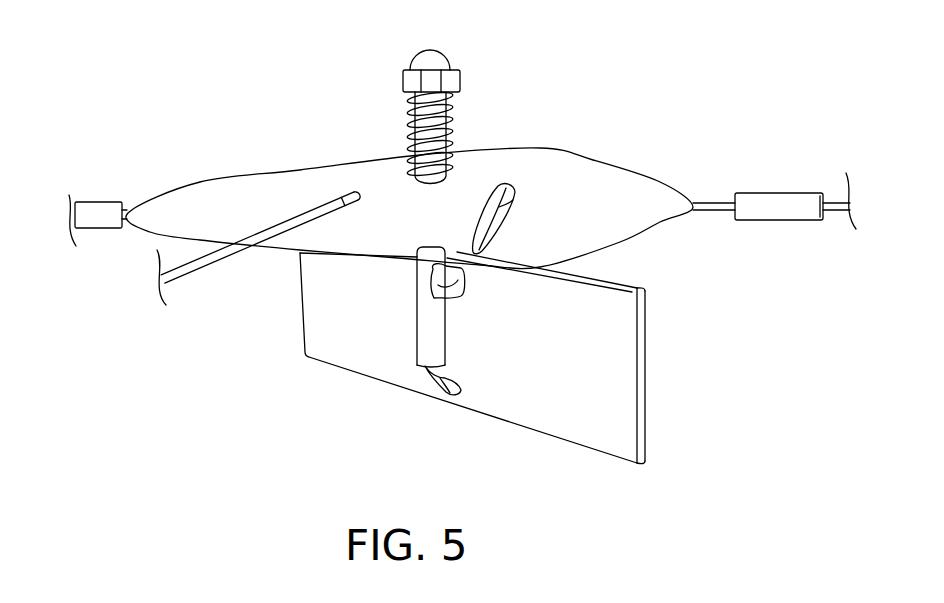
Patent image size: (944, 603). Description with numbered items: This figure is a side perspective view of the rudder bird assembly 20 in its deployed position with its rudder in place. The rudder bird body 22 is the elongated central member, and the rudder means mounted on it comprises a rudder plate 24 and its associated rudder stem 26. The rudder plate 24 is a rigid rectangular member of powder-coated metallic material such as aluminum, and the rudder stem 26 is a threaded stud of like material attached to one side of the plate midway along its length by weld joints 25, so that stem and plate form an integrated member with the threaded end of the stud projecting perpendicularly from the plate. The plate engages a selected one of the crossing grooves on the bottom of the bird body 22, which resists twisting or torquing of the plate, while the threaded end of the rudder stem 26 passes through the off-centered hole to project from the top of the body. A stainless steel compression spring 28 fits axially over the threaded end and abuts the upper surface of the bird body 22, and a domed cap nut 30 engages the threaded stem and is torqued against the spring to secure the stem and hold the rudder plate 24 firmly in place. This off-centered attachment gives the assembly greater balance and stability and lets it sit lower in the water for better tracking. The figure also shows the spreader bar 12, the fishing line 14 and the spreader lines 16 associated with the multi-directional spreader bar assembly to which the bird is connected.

The spreader bar 12 is at (206, 281).
The fishing line 14 is at (712, 200).
The spreader lines 16 is at (96, 200).
The rudder bird assembly 20 is at (270, 144).
The rudder bird body 22 is at (635, 172).
The rudder plate 24 is at (648, 342).
The weld joints 25 is at (444, 390).
The rudder stem 26 is at (418, 307).
The compression spring 28 is at (455, 110).
The domed cap nut 30 is at (431, 49).